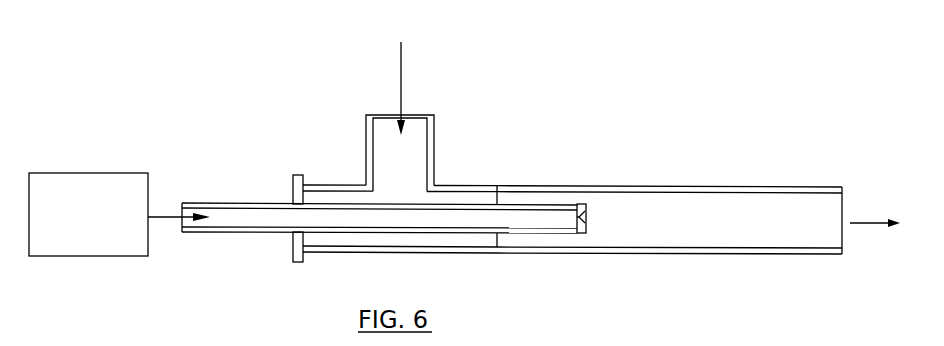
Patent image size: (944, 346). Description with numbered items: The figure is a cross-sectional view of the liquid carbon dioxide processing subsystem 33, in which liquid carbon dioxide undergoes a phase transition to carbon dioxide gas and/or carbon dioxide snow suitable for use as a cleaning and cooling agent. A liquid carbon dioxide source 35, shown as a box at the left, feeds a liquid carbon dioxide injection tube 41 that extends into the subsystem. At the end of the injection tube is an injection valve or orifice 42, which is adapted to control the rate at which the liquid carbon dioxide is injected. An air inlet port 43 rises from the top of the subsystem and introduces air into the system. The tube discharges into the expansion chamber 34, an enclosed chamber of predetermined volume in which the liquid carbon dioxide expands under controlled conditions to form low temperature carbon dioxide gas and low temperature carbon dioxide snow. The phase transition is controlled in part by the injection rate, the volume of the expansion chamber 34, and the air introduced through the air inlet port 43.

The liquid carbon dioxide source 35 is at (103, 173).
The liquid carbon dioxide injection tube 41 is at (242, 232).
The injection valve or orifice 42 is at (587, 214).
The liquid carbon dioxide processing subsystem 33 is at (452, 160).
The expansion chamber 34 is at (716, 186).
The air inlet port 43 is at (401, 58).